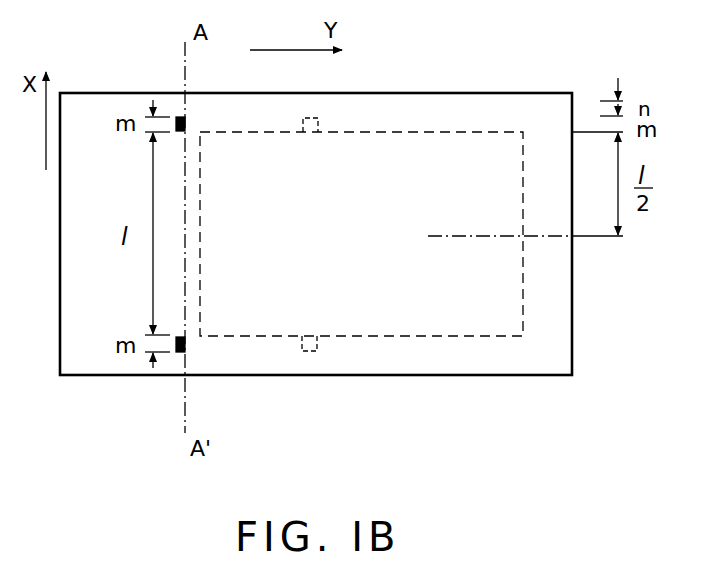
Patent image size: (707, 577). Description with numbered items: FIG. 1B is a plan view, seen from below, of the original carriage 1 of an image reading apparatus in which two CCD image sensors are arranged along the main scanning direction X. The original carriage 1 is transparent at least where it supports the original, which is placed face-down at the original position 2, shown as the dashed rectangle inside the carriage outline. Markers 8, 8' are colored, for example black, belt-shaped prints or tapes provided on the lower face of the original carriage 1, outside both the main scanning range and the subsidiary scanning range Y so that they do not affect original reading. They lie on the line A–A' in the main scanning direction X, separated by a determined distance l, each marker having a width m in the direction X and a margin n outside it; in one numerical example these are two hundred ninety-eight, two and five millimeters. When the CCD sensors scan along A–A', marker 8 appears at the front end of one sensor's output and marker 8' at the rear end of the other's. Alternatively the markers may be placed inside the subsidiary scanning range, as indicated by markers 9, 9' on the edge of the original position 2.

The original carriage 1 is at (527, 93).
The original position 2 is at (443, 132).
The marker 8 is at (207, 94).
The marker 8' is at (207, 382).
The marker 9 is at (337, 92).
The marker 9' is at (323, 382).